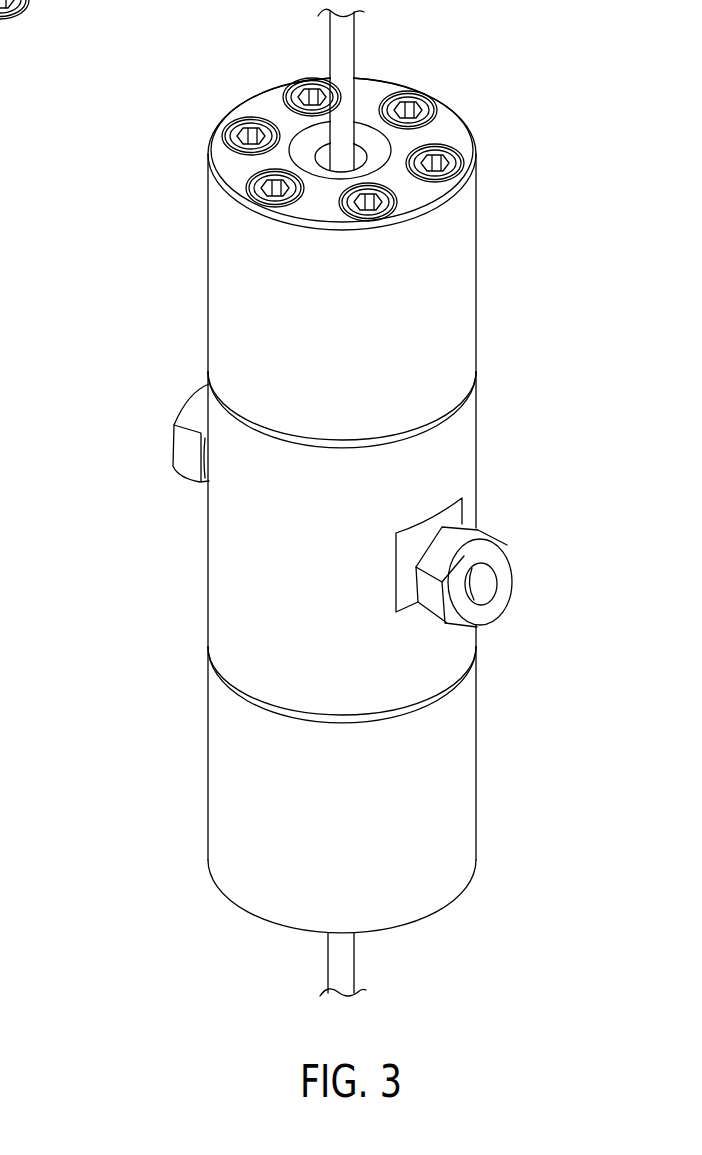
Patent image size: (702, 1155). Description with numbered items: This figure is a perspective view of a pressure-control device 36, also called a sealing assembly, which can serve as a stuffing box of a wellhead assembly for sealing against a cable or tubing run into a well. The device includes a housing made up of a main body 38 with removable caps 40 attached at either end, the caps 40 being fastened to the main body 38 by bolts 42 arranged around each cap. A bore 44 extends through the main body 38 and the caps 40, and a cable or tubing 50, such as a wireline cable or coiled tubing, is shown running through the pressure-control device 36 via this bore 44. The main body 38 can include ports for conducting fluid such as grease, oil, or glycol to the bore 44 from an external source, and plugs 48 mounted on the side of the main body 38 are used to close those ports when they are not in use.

The pressure-control device 36 is at (138, 152).
The main body 38 is at (222, 616).
The removable caps 40 is at (222, 284).
The bolts 42 is at (288, 86).
The bore 44 is at (355, 148).
The plugs 48 is at (180, 446).
The cable or tubing 50 is at (334, 42).